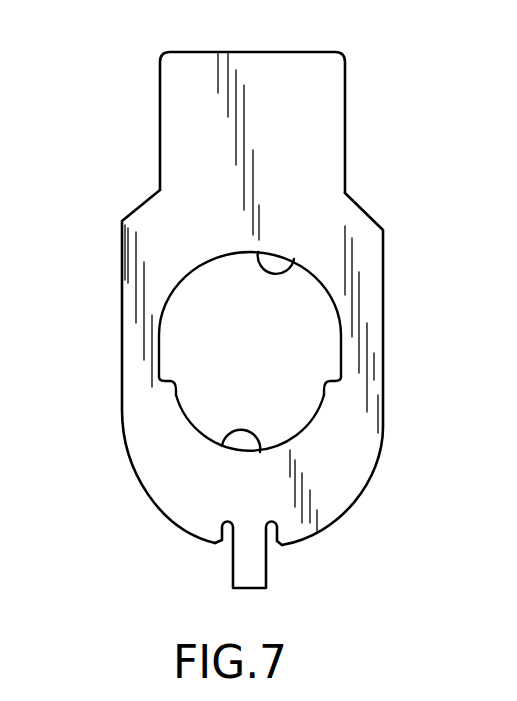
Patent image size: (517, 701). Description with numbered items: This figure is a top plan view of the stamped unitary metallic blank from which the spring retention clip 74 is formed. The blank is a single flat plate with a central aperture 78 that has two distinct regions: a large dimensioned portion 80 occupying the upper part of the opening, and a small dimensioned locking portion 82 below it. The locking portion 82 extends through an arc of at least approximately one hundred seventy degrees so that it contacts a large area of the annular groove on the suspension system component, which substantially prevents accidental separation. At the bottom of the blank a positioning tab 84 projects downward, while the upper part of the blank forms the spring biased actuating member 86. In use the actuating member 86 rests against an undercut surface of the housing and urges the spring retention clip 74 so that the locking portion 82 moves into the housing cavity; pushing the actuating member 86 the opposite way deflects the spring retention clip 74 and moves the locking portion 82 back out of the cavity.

The spring retention clip 74 is at (104, 408).
The aperture 78 is at (282, 351).
The large dimensioned portion 80 is at (292, 265).
The small dimensioned locking portion 82 is at (225, 445).
The positioning tab 84 is at (250, 568).
The spring biased actuating member 86 is at (302, 70).